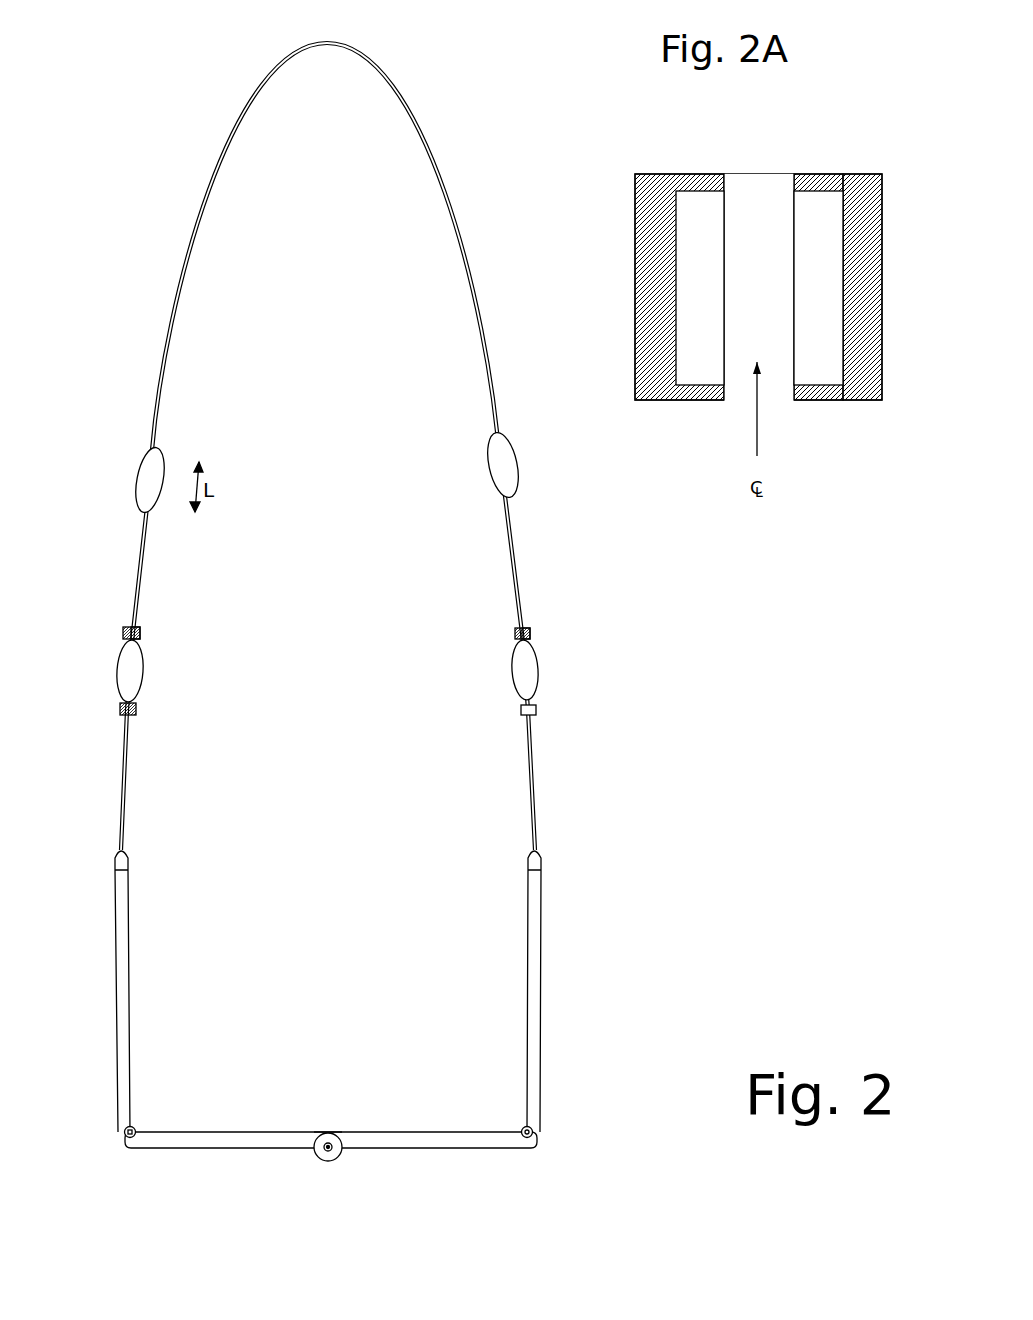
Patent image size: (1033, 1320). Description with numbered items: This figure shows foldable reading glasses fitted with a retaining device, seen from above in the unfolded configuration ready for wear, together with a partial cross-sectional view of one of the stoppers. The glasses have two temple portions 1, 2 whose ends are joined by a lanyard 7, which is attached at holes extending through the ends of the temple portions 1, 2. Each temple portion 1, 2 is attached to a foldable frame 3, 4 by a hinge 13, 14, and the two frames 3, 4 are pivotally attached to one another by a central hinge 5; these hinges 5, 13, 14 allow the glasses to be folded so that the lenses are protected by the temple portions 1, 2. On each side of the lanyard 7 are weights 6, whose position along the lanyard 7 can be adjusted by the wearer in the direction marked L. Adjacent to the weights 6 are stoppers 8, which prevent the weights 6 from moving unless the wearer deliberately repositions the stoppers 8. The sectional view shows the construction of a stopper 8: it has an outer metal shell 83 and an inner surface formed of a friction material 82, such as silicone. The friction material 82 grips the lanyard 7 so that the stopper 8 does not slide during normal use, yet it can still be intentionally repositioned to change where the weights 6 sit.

In FIG. 2, the temple portion 1 is at (536, 994).
In FIG. 2, the temple portion 2 is at (116, 986).
In FIG. 2, the foldable frame 3 is at (435, 1140).
In FIG. 2, the foldable frame 4 is at (225, 1137).
In FIG. 2, the hinge 5 is at (328, 1161).
In FIG. 2, the weights 6 is at (150, 480).
In FIG. 2, the lanyard 7 is at (432, 161).
In FIG. 2, the stoppers 8 is at (139, 709).
In FIG. 2A, the stoppers 8 is at (625, 220).
In FIG. 2, the hinge 13 is at (531, 1139).
In FIG. 2, the hinge 14 is at (125, 1139).
In FIG. 2, the friction material 82 is at (127, 627).
In FIG. 2A, the friction material 82 is at (660, 232).
In FIG. 2, the metal shell 83 is at (143, 632).
In FIG. 2A, the metal shell 83 is at (813, 213).